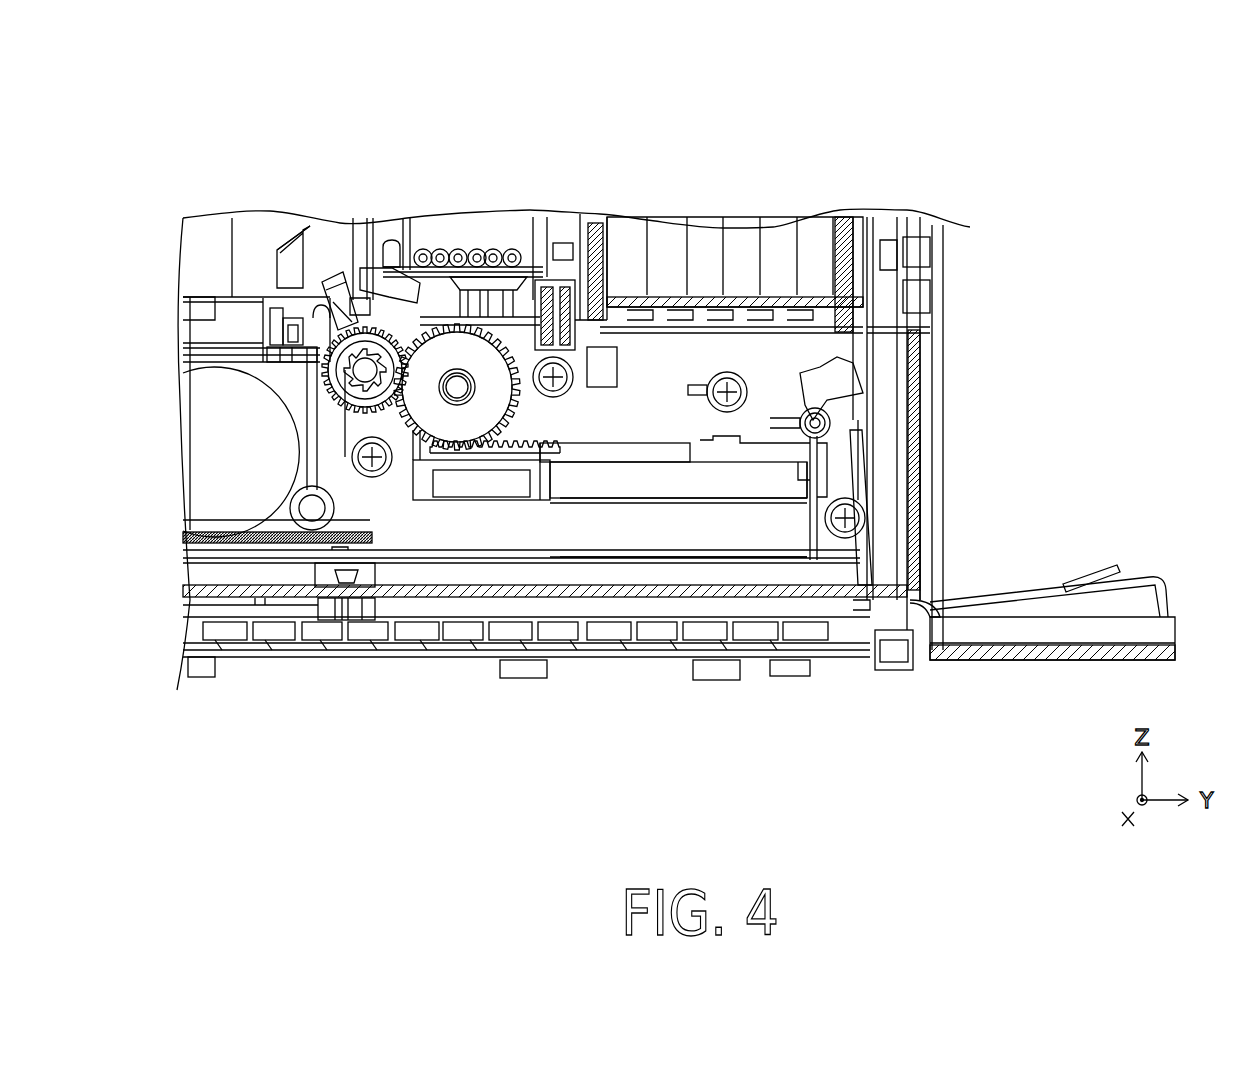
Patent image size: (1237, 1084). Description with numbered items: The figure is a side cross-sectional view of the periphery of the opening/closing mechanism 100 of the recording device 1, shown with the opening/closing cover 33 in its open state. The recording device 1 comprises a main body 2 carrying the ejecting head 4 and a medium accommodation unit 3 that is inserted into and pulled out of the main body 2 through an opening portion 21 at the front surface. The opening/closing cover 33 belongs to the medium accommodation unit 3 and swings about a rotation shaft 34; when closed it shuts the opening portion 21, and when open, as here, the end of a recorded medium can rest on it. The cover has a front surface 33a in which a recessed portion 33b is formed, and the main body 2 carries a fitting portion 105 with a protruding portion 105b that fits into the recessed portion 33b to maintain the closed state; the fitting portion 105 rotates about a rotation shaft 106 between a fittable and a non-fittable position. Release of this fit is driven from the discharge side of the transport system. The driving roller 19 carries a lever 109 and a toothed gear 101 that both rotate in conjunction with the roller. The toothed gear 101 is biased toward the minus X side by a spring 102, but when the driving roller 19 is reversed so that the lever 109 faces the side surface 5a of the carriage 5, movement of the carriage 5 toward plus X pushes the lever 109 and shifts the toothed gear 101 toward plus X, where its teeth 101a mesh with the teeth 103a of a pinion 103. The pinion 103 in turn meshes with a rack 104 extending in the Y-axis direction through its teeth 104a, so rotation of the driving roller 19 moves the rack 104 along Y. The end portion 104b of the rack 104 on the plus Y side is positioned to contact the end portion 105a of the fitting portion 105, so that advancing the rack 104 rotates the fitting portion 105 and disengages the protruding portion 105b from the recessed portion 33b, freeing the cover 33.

The recording device 1 is at (1170, 127).
The main body 2 is at (943, 288).
The medium accommodation unit 3 is at (1018, 695).
The ejecting head 4 is at (215, 320).
The carriage 5 is at (245, 235).
The side surface of the carriage 5a is at (363, 262).
The driving roller 19 is at (388, 410).
The opening portion 21 is at (985, 447).
The opening/closing cover 33 is at (1175, 635).
The front surface 33a is at (1025, 590).
The recessed portion 33b is at (1120, 572).
The rotation shaft 34 is at (933, 632).
The opening/closing mechanism 100 is at (636, 395).
The toothed gear 101 is at (297, 302).
The teeth of the toothed gear 101a is at (348, 380).
The spring 102 is at (418, 325).
The pinion 103 is at (483, 338).
The teeth of the pinion 103a is at (417, 420).
The rack 104 is at (727, 457).
The teeth of the rack 104a is at (535, 430).
The end portion of the rack 104b is at (803, 463).
The fitting portion 105 is at (786, 375).
The end portion of the fitting portion 105a is at (862, 500).
The protruding portion 105b is at (867, 373).
The rotation shaft 106 is at (860, 350).
The lever 109 is at (332, 290).